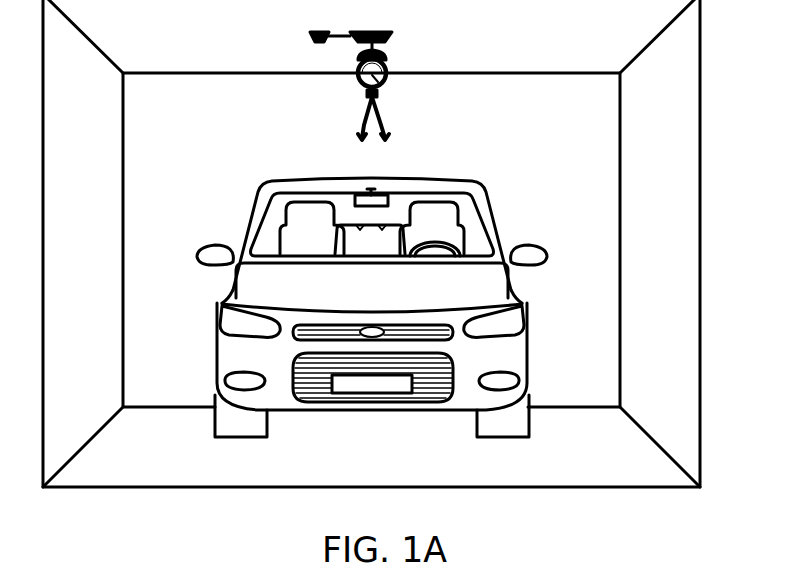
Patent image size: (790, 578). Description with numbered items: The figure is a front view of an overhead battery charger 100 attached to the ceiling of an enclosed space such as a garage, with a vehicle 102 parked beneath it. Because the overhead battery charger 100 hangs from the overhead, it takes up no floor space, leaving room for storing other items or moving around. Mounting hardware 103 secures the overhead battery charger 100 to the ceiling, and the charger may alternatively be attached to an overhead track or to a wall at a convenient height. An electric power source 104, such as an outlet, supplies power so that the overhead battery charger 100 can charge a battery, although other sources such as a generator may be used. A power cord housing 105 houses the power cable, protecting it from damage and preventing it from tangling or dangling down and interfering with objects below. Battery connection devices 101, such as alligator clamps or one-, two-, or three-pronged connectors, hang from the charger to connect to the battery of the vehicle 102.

The overhead battery charger 100 is at (407, 82).
The battery connection devices 101 is at (362, 125).
The vehicle 102 is at (532, 354).
The mounting hardware 103 is at (393, 40).
The electric power source 104 is at (310, 36).
The power cord housing 105 is at (382, 86).